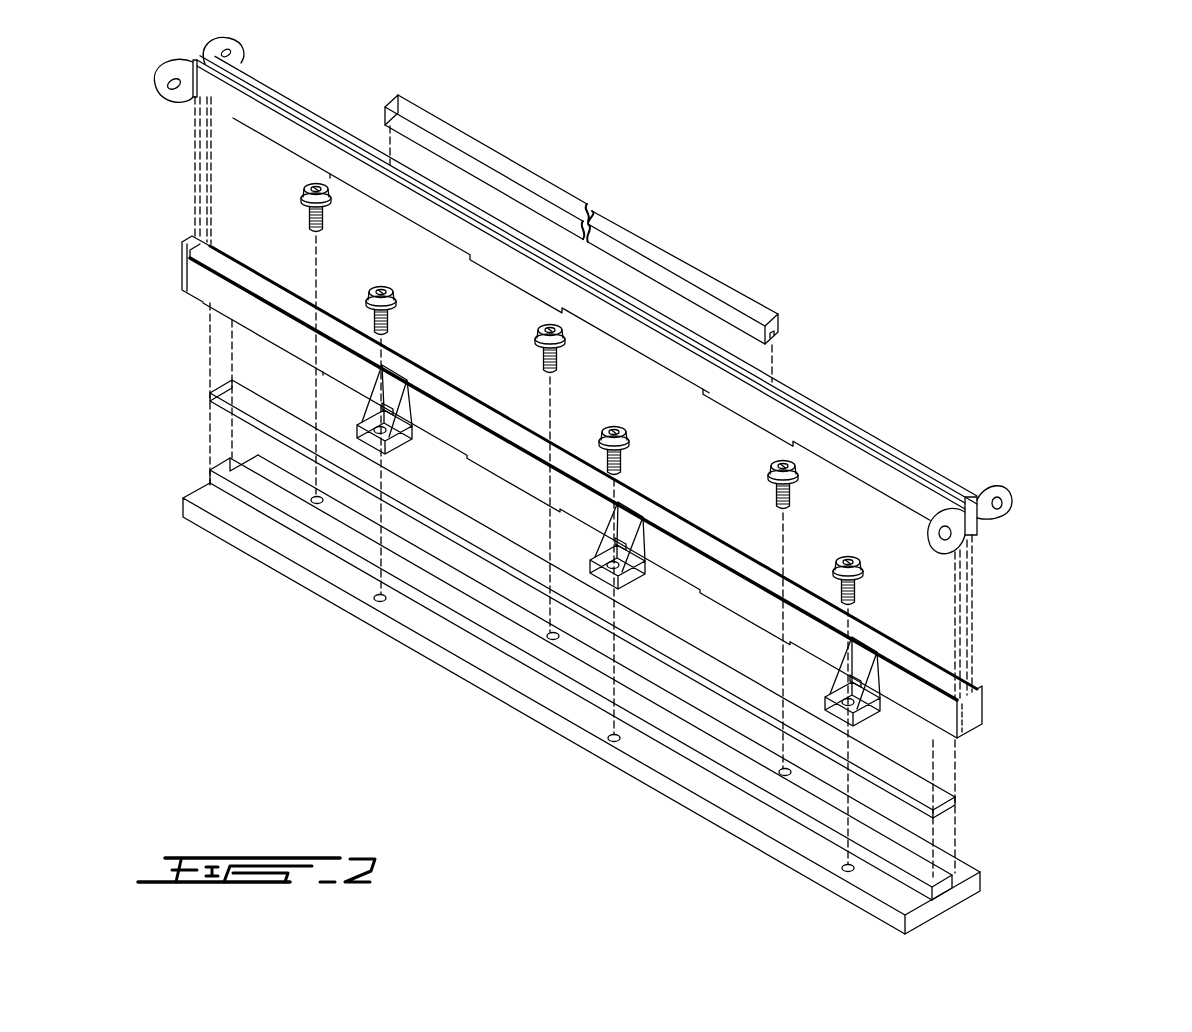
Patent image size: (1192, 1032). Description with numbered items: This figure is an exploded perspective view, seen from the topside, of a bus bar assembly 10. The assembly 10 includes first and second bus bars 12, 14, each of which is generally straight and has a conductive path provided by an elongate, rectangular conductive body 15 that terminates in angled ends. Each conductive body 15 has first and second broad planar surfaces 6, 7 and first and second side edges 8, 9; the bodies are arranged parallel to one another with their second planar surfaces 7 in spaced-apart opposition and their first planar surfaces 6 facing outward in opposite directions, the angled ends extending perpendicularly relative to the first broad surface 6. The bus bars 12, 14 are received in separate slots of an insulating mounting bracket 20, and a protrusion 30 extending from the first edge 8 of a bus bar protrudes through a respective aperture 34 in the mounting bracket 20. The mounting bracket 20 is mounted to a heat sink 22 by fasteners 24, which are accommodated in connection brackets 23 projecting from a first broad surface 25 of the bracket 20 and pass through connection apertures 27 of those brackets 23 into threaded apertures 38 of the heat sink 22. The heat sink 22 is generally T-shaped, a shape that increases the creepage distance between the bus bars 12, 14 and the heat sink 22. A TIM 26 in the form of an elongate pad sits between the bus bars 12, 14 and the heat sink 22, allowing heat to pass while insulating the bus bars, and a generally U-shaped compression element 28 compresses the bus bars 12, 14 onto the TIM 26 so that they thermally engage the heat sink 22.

The first broad planar surface 6 is at (272, 131).
The second broad planar surface 7 is at (193, 60).
The first side edge 8 is at (230, 114).
The second side edge 9 is at (240, 84).
The bus bar assembly 10 is at (1058, 226).
The first bus bar 12 is at (885, 473).
The second bus bar 14 is at (927, 463).
The conductive body 15 is at (300, 147).
The insulating mounting bracket 20 is at (985, 700).
The heat sink 22 is at (960, 900).
The connection bracket 23 is at (385, 430).
The fastener 24 is at (847, 552).
The first broad surface of the insulating mounting bracket 25 is at (233, 302).
The TIM 26 is at (955, 808).
The connection aperture of the connection bracket 27 is at (382, 430).
The compression element 28 is at (693, 272).
The protrusion 30 is at (730, 412).
The aperture of the insulating mounting bracket 34 is at (733, 607).
The threaded aperture 38 is at (614, 742).